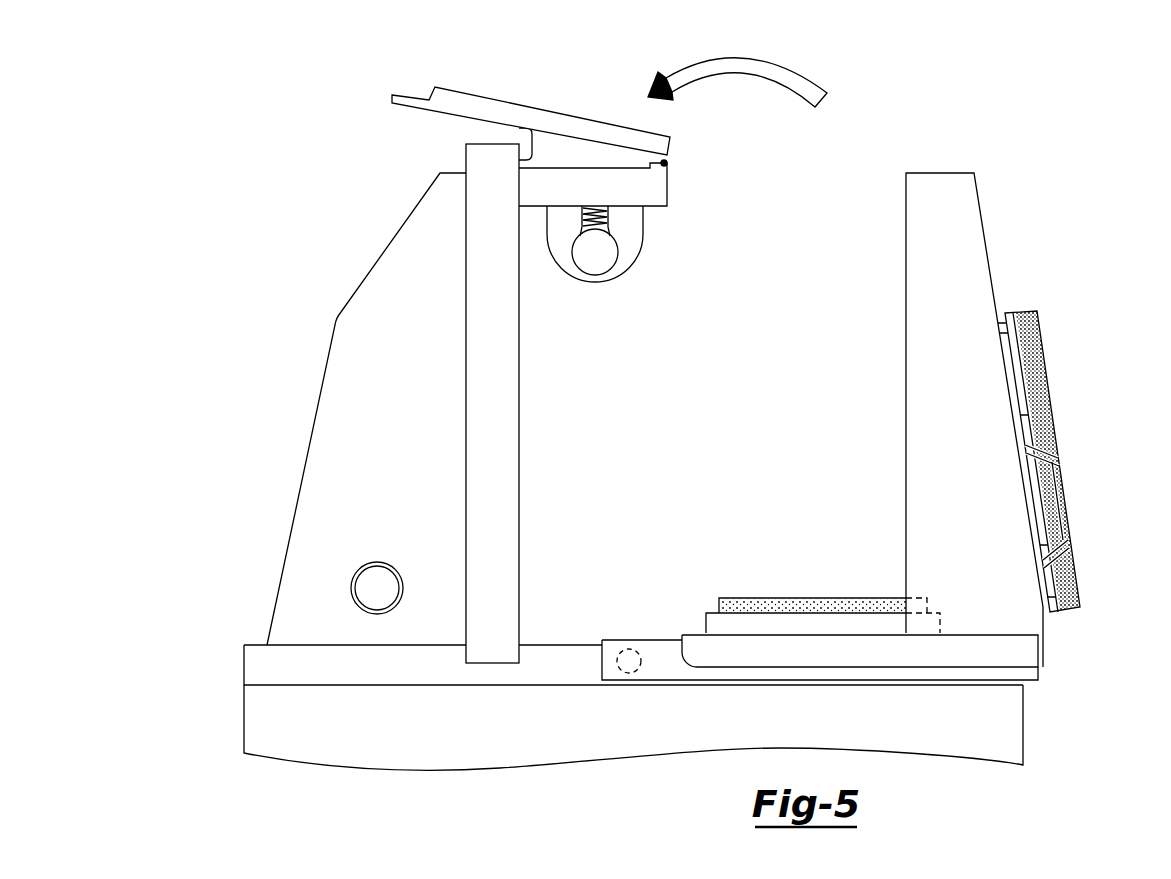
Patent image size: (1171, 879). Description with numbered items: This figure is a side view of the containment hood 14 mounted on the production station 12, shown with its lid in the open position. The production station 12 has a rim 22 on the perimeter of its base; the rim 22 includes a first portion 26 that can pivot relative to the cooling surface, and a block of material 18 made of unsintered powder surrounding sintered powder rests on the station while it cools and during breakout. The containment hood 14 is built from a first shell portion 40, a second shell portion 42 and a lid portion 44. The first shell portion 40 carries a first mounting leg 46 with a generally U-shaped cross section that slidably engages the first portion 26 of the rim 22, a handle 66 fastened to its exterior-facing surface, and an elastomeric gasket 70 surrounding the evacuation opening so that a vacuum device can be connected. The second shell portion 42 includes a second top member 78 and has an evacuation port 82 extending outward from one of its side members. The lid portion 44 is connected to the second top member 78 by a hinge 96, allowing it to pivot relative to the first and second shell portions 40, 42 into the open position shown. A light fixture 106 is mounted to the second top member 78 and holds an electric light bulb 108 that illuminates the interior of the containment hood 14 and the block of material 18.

The production station 12 is at (1026, 730).
The containment hood 14 is at (1029, 416).
The block of material 18 is at (778, 598).
The rim 22 is at (243, 666).
The first portion 26 is at (650, 672).
The first shell portion 40 is at (996, 255).
The second shell portion 42 is at (366, 409).
The lid portion 44 is at (501, 94).
The first mounting leg 46 is at (870, 660).
The handle 66 is at (1068, 498).
The elastomeric gasket 70 is at (1075, 450).
The second top member 78 is at (658, 192).
The evacuation port 82 is at (377, 562).
The hinge 96 is at (665, 163).
The light fixture 106 is at (601, 286).
The electric light bulb 108 is at (608, 252).